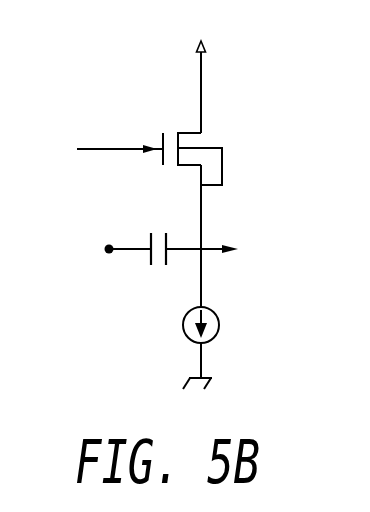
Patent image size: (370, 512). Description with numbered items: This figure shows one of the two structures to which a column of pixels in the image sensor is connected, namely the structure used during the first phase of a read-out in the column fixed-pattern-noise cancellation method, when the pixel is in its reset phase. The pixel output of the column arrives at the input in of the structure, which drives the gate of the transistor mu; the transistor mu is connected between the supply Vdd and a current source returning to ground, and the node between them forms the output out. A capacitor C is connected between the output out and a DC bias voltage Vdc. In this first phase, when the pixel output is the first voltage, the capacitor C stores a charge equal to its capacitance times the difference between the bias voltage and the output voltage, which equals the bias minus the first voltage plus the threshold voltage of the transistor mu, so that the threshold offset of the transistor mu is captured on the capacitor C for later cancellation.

The supply voltage Vdd is at (231, 80).
The transistor mu is at (213, 159).
The input in is at (110, 130).
The capacitor C is at (153, 264).
The DC bias voltage Vdc is at (55, 243).
The output out is at (246, 244).